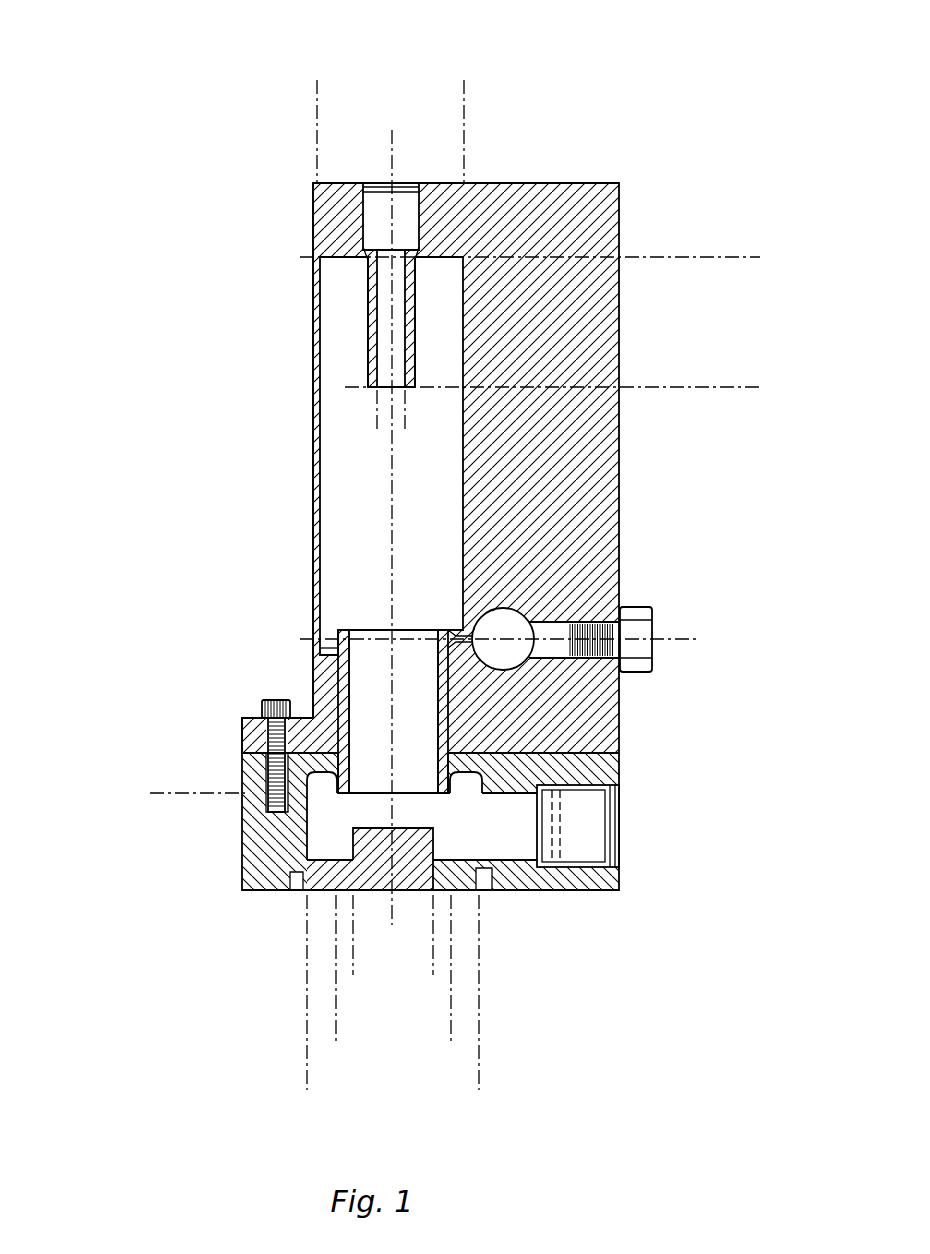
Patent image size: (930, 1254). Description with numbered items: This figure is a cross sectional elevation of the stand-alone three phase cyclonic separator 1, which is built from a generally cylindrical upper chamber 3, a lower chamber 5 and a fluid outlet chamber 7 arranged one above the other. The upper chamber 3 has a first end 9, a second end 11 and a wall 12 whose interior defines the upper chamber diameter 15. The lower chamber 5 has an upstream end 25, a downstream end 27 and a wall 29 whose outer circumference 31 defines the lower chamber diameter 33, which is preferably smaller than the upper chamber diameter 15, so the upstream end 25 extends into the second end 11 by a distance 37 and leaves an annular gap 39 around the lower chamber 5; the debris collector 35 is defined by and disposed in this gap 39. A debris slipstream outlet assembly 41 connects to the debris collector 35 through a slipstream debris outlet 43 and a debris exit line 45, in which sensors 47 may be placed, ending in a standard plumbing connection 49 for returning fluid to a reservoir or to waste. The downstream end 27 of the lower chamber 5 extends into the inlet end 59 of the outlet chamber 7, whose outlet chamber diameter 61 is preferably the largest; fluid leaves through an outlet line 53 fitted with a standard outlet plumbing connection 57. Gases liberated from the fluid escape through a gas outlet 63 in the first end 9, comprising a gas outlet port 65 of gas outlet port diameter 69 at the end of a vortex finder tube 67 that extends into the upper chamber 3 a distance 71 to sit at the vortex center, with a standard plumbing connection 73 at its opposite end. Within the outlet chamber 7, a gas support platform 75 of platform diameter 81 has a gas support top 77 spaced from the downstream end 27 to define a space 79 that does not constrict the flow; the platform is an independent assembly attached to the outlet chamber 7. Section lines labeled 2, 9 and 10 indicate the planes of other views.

The three phase cyclonic separator 1 is at (258, 130).
The section line 2- 2 is at (663, 297).
The upper chamber 3 is at (340, 485).
The lower chamber 5 is at (352, 662).
The fluid outlet chamber 7 is at (477, 887).
The first end 9 is at (322, 266).
The section line 10- 10 is at (657, 828).
The second end 11 is at (620, 717).
The wall 12 is at (313, 337).
The upper chamber diameter 15 is at (322, 107).
The upstream end 25 is at (329, 625).
The downstream end 27 is at (527, 883).
The wall 29 is at (590, 753).
The outer circumference 31 is at (337, 688).
The lower chamber diameter 33 is at (341, 1003).
The debris collector 35 is at (324, 634).
The distance 37 is at (776, 700).
The annular gap 39 is at (441, 627).
The debris slipstream outlet assembly 41 is at (562, 610).
The slipstream debris outlet 43 is at (465, 631).
The debris exit line 45 is at (585, 615).
The sensors 47 is at (503, 623).
The standard plumbing connection 49 is at (655, 622).
The outlet line 53 is at (553, 867).
The standard outlet plumbing connection 57 is at (592, 812).
The inlet end 59 is at (282, 776).
The outlet chamber diameter 61 is at (474, 1068).
The gas outlet 63 is at (361, 377).
The gas outlet port 65 is at (385, 415).
The vortex finder tube 67 is at (415, 337).
The gas outlet port diameter 69 is at (410, 412).
The distance 71 is at (730, 382).
The standard plumbing connection 73 is at (408, 212).
The gas support platform 75 is at (440, 843).
The gas support top 77 is at (363, 817).
The space 79 is at (165, 798).
The platform diameter 81 is at (428, 955).